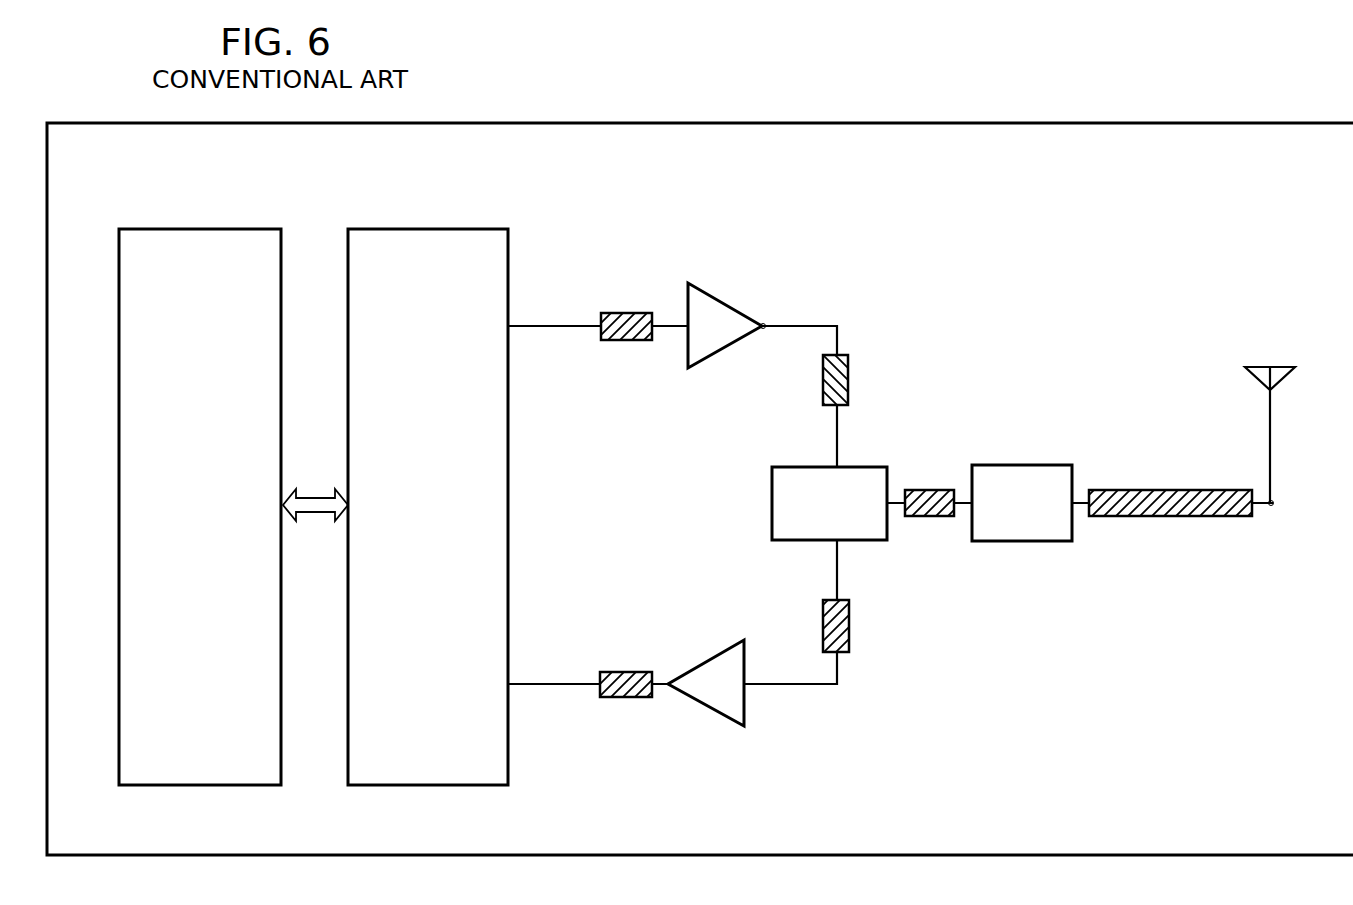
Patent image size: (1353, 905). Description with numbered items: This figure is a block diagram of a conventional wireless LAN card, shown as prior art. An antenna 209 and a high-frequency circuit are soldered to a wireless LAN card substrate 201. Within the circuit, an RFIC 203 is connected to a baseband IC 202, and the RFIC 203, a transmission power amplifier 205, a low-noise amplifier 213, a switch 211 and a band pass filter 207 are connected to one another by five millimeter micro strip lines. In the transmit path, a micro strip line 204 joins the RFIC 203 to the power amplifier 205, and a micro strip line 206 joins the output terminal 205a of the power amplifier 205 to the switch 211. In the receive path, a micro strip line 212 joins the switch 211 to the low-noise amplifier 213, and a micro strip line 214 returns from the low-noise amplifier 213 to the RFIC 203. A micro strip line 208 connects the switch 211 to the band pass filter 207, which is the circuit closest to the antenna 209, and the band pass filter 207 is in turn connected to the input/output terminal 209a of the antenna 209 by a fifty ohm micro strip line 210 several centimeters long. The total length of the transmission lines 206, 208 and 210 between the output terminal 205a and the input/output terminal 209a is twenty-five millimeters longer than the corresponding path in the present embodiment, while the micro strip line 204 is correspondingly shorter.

The wireless LAN card substrate 201 is at (803, 123).
The baseband IC 202 is at (205, 229).
The RFIC 203 is at (432, 229).
The micro strip line 204 is at (627, 313).
The transmission power amplifier 205 is at (708, 302).
The output terminal of the power amplifier 205a is at (764, 325).
The micro strip line 206 is at (848, 368).
The band pass filter 207 is at (1018, 465).
The micro strip line 208 is at (930, 490).
The antenna 209 is at (1268, 366).
The input/output terminal of the antenna 209a is at (1273, 504).
The micro strip line 210 is at (1172, 490).
The switch 211 is at (772, 503).
The micro strip line 212 is at (849, 617).
The low-noise amplifier 213 is at (725, 657).
The micro strip line 214 is at (628, 672).